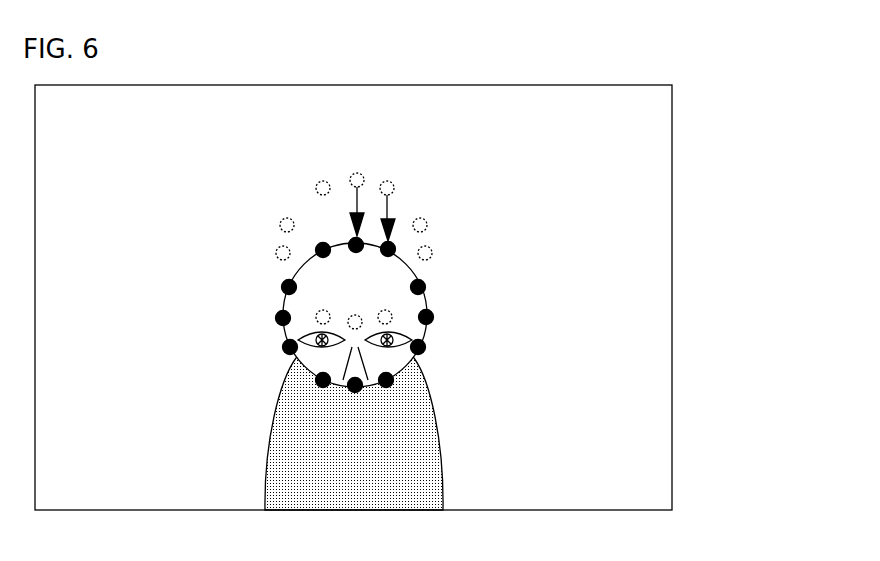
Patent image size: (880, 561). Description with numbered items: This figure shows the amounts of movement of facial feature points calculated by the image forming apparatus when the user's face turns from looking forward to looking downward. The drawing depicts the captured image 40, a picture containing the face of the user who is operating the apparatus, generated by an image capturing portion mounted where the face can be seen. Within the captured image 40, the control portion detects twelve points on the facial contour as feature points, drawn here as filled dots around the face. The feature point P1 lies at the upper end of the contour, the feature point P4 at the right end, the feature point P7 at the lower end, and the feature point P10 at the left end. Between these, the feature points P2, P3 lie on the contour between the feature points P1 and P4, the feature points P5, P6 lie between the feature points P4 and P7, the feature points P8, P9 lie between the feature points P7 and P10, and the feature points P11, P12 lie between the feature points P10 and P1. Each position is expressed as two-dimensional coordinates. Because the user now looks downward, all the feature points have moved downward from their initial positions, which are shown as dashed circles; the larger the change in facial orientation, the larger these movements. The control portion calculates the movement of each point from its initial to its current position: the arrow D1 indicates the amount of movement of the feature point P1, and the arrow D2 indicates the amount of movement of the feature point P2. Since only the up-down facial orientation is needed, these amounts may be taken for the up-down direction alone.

The captured image 40 is at (672, 168).
The arrow D1 is at (350, 236).
The arrow D2 is at (390, 212).
The feature point P1 is at (350, 240).
The feature point P2 is at (390, 249).
The feature point P3 is at (419, 286).
The feature point P4 is at (428, 317).
The feature point P5 is at (419, 348).
The feature point P6 is at (386, 381).
The feature point P7 is at (355, 385).
The feature point P8 is at (322, 381).
The feature point P9 is at (289, 347).
The feature point P10 is at (281, 317).
The feature point P11 is at (289, 286).
The feature point P12 is at (318, 248).